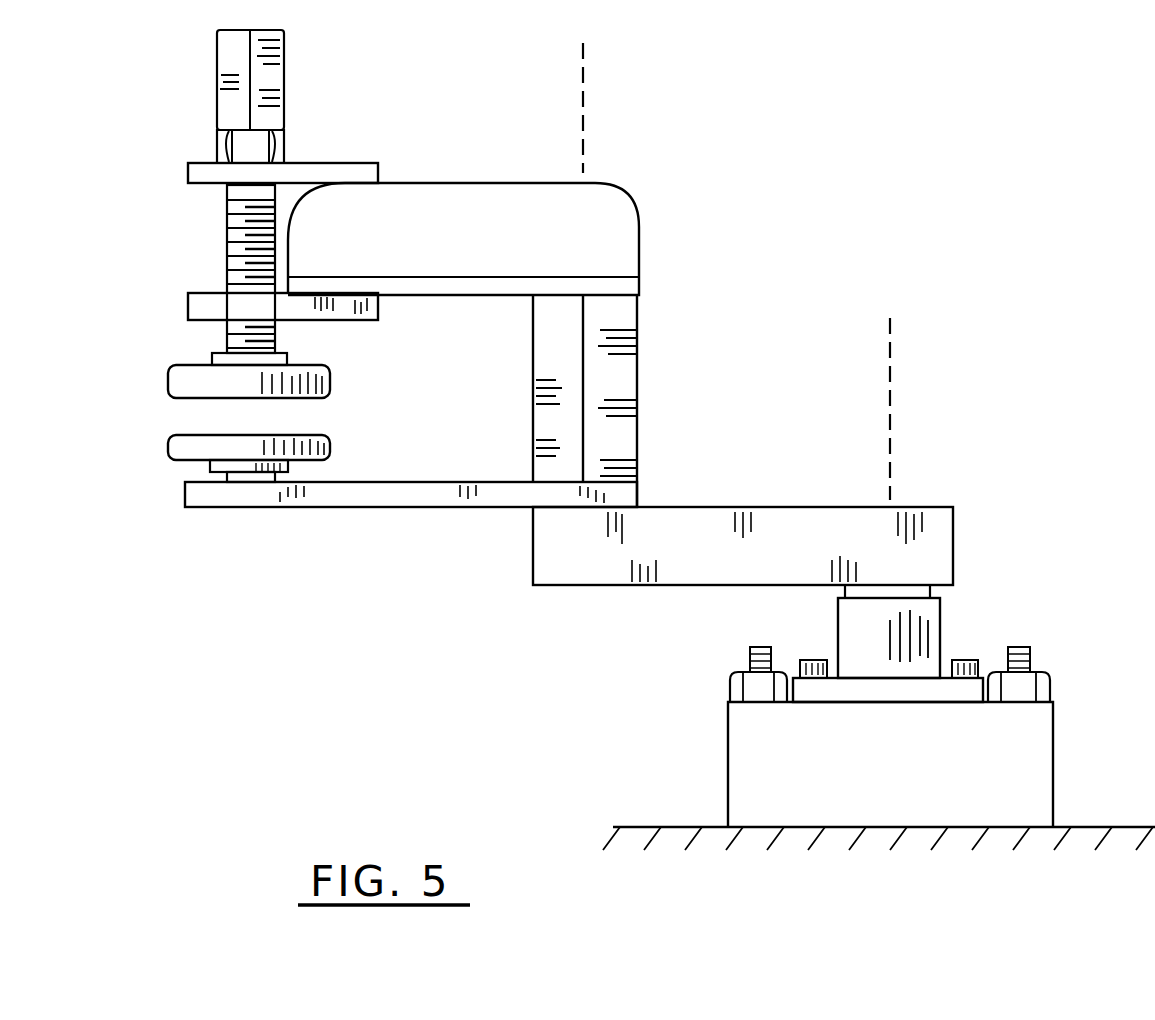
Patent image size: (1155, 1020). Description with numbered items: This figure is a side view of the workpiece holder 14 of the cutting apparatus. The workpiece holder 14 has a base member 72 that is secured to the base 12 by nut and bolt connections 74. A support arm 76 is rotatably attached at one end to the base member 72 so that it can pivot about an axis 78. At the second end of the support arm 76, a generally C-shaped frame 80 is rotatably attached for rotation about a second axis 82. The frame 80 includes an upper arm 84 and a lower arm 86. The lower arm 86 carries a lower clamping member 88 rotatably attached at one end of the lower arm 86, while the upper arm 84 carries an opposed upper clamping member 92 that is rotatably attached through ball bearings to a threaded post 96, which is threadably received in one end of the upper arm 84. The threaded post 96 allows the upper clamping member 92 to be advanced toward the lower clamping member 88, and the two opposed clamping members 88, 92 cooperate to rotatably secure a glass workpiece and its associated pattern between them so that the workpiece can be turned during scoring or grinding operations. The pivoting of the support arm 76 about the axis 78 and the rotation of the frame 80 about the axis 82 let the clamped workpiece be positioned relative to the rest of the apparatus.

The base 12 is at (645, 826).
The workpiece holder 14 is at (777, 130).
The base member 72 is at (897, 779).
The nut and bolt connections 74 is at (734, 687).
The support arm 76 is at (808, 521).
The axis 78 is at (890, 365).
The C-shaped frame 80 is at (618, 376).
The axis 82 is at (585, 100).
The upper arm 84 is at (471, 216).
The lower arm 86 is at (431, 482).
The lower clamping member 88 is at (333, 447).
The upper clamping member 92 is at (330, 378).
The threaded post 96 is at (234, 248).